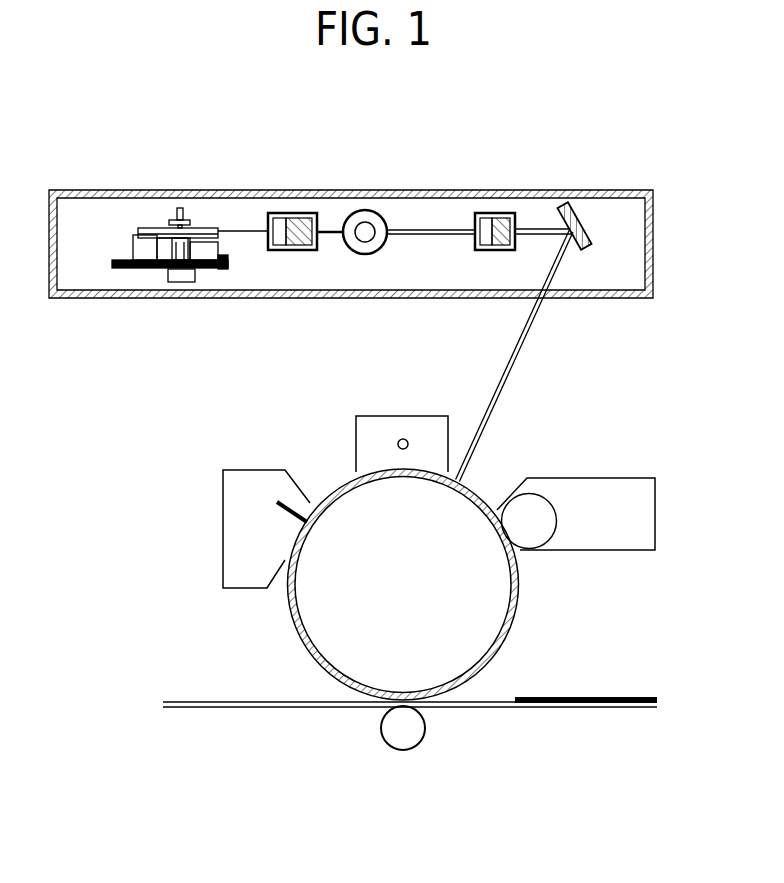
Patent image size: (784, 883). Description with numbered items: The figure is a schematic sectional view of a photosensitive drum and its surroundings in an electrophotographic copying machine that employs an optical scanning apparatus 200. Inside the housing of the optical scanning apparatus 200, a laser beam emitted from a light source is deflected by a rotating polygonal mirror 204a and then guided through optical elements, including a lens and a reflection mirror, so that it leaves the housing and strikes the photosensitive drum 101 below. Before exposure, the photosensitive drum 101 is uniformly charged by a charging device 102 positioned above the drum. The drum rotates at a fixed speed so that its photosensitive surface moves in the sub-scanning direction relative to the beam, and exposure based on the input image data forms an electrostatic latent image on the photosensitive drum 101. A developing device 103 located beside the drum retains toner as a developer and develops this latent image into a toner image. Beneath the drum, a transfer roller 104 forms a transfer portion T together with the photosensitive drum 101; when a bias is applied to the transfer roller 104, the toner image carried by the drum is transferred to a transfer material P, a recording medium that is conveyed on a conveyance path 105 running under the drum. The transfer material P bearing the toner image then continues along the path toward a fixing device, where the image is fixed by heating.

The optical scanning apparatus 200 is at (600, 190).
The polygonal mirror 204a is at (216, 230).
The photosensitive drum 101 is at (290, 626).
The charging device 102 is at (398, 415).
The developing device 103 is at (585, 478).
The transfer roller 104 is at (407, 752).
The conveyance path 105 is at (497, 708).
The transfer material P is at (578, 698).
The transfer portion T is at (363, 708).